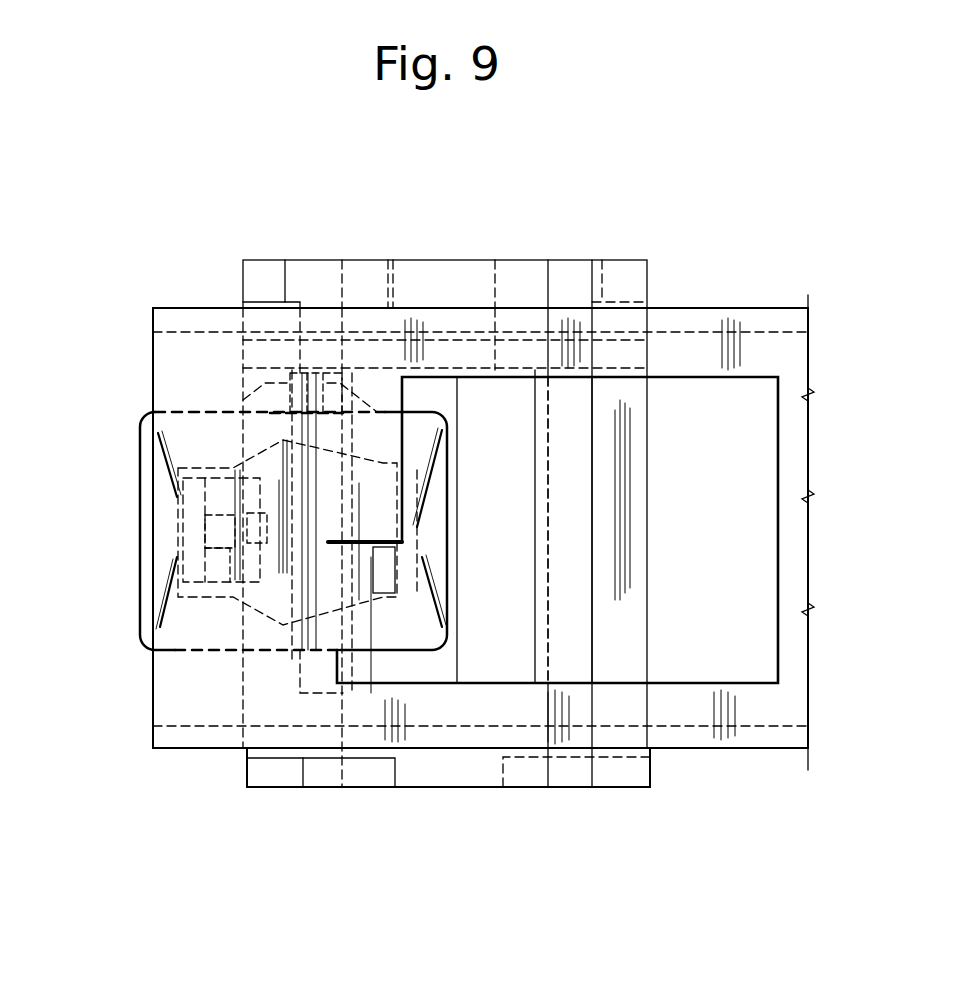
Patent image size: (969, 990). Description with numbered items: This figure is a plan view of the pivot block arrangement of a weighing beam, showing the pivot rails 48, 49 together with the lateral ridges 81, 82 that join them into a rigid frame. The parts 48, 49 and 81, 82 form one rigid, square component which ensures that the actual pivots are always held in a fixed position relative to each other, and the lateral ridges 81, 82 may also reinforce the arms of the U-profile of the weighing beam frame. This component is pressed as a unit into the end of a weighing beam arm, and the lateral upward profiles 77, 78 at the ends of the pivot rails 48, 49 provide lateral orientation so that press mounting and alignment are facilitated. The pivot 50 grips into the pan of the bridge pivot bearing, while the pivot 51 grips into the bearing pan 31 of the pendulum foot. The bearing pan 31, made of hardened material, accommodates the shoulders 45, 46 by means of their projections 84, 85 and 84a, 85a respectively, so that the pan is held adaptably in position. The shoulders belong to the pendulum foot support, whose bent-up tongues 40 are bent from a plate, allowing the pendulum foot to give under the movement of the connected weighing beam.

The bearing pan 31 is at (262, 567).
The bent-up tongues 40 is at (307, 690).
The shoulder 45 is at (203, 532).
The shoulder 46 is at (447, 420).
The pivot rail 48 is at (278, 428).
The pivot rail 49 is at (635, 405).
The pivot 50 is at (595, 635).
The pivot 51 is at (312, 618).
The lateral upward profile 77 is at (258, 300).
The lateral upward profile 78 is at (620, 298).
The lateral ridge 81 is at (447, 285).
The lateral ridge 82 is at (437, 772).
The projection 84 is at (220, 558).
The projection 84a is at (389, 570).
The projection 85 is at (215, 492).
The projection 85a is at (381, 493).